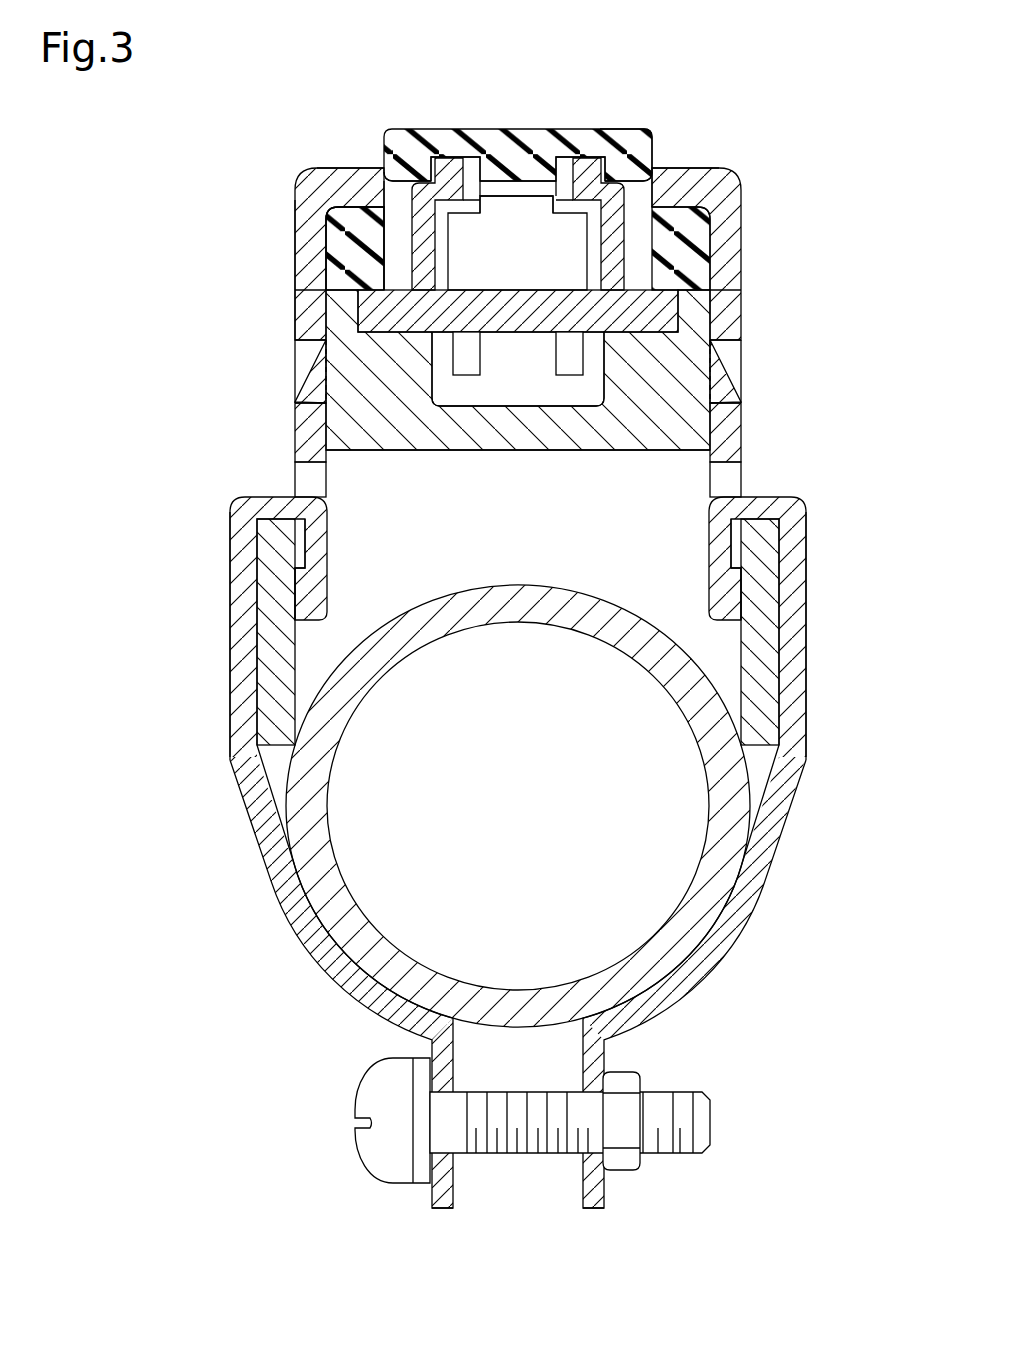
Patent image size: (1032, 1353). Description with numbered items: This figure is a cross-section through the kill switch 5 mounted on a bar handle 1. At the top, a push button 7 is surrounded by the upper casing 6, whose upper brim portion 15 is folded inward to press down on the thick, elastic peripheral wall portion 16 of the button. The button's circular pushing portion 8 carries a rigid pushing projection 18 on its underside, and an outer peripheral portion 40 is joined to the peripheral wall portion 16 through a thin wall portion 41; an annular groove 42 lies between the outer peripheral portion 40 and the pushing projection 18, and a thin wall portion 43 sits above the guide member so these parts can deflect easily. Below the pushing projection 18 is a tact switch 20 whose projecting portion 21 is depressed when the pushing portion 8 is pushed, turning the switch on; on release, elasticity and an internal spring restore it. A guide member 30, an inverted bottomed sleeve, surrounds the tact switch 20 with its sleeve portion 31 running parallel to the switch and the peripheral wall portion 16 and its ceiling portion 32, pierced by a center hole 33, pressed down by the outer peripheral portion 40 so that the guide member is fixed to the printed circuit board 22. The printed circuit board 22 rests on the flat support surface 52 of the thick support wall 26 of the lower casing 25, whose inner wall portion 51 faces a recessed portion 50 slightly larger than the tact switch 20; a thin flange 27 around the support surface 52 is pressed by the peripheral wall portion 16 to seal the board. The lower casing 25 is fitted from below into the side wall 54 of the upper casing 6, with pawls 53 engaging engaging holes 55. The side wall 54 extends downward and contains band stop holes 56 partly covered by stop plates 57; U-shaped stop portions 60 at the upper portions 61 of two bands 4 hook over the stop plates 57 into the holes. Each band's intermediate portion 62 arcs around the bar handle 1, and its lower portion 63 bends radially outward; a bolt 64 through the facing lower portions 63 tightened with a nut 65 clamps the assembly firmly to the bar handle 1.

The bar handle 1 is at (700, 925).
The band 4 is at (513, 999).
The kill switch 5 is at (737, 90).
The upper casing 6 is at (287, 282).
The push button 7 is at (378, 108).
The pushing portion 8 is at (505, 196).
The upper brim portion 15 is at (302, 165).
The peripheral wall portion 16 is at (333, 217).
The pushing projection 18 is at (540, 196).
The tact switch 20 is at (560, 240).
The projecting portion 21 is at (490, 200).
The printed circuit board 22 is at (518, 332).
The lower casing 25 is at (518, 458).
The support wall 26 is at (345, 425).
The flange 27 is at (330, 300).
The guide member 30 is at (392, 222).
The sleeve portion 31 is at (337, 207).
The ceiling portion 32 is at (432, 160).
The center hole 33 is at (468, 175).
The outer peripheral portion 40 is at (633, 133).
The thin wall portion 41 is at (653, 137).
The annular groove 42 is at (587, 133).
The thin wall portion 43 is at (598, 150).
The recessed portion 50 is at (593, 410).
The inner wall portion 51 is at (600, 375).
The support surface 52 is at (712, 292).
The pawl 53 is at (300, 397).
The side wall 54 is at (293, 238).
The engaging hole 55 is at (310, 357).
The band stop hole 56 is at (303, 478).
The stop plate 57 is at (262, 567).
The stop portion 60 is at (313, 555).
The upper portion 61 is at (240, 655).
The intermediate portion 62 is at (265, 872).
The lower portion 63 is at (437, 1207).
The bolt 64 is at (370, 1100).
The nut 65 is at (630, 1075).